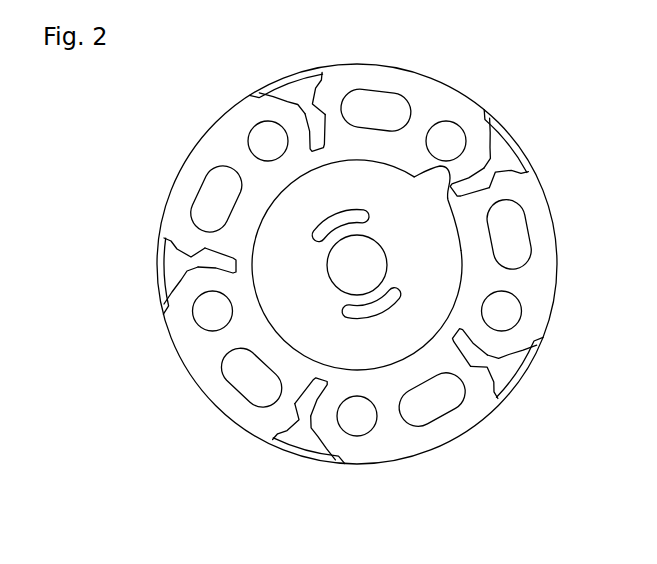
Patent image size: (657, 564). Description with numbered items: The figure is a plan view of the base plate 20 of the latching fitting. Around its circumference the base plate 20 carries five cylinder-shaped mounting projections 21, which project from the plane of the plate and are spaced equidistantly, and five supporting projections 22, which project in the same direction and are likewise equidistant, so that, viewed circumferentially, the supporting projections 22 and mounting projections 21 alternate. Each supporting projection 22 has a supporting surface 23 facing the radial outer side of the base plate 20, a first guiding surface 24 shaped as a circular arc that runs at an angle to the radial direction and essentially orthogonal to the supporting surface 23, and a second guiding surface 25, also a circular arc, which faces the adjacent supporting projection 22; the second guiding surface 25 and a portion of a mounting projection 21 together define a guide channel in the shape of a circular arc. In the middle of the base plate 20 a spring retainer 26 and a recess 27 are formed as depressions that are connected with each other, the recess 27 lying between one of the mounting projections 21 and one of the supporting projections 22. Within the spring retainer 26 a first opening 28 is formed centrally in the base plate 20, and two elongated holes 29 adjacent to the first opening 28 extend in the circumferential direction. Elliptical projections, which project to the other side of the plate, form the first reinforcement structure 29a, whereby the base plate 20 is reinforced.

The base plate 20 is at (126, 149).
The mounting projection 21 is at (250, 140).
The supporting projection 22 is at (313, 91).
The supporting surface 23 is at (332, 92).
The first guiding surface 24 is at (320, 84).
The second guiding surface 25 is at (277, 110).
The spring retainer 26 is at (283, 304).
The recess 27 is at (434, 181).
The first opening 28 is at (346, 274).
The elongated hole 29 is at (336, 221).
The first reinforcement structure 29a is at (416, 409).